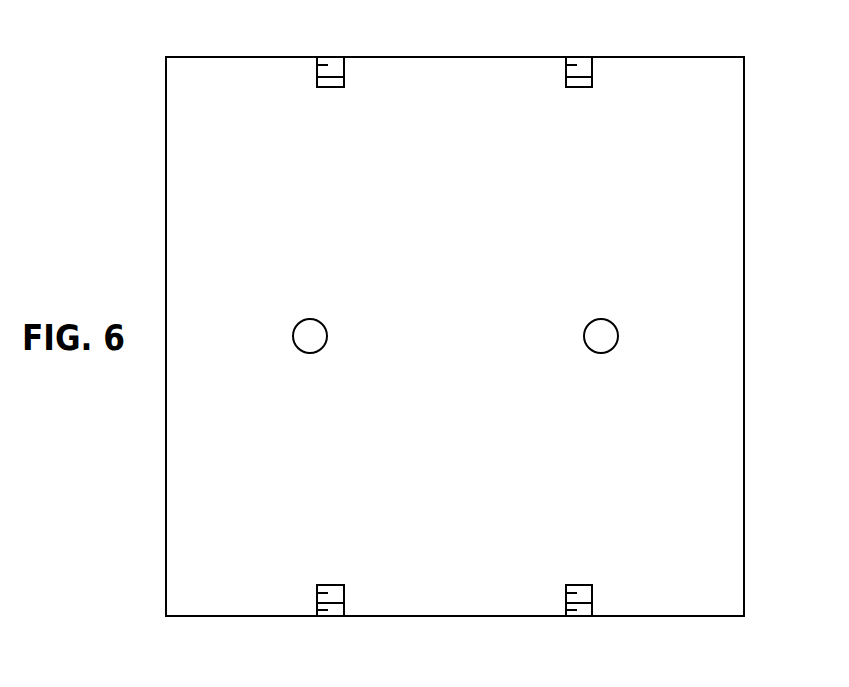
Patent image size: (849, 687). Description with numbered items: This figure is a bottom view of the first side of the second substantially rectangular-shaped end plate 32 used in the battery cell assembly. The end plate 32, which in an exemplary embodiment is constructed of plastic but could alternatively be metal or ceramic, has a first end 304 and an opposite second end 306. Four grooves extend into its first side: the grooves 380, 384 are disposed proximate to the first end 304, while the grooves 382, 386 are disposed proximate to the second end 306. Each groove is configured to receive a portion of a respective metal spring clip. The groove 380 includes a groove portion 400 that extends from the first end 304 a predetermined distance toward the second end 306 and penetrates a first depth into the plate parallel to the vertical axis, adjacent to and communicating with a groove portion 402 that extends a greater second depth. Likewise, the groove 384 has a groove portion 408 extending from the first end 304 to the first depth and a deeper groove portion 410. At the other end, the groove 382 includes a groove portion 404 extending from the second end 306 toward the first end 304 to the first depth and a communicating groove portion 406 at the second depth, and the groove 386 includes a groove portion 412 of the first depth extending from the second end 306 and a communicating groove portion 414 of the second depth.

The second substantially rectangular-shaped end plate 32 is at (760, 207).
The first end 304 is at (219, 616).
The second end 306 is at (219, 57).
The groove 380 is at (335, 610).
The groove 382 is at (335, 65).
The groove 384 is at (584, 610).
The groove 386 is at (584, 65).
The groove portion 400 is at (322, 610).
The groove portion 402 is at (322, 593).
The groove portion 404 is at (320, 65).
The groove portion 406 is at (322, 77).
The groove portion 408 is at (571, 610).
The groove portion 410 is at (571, 593).
The groove portion 412 is at (570, 65).
The groove portion 414 is at (571, 77).